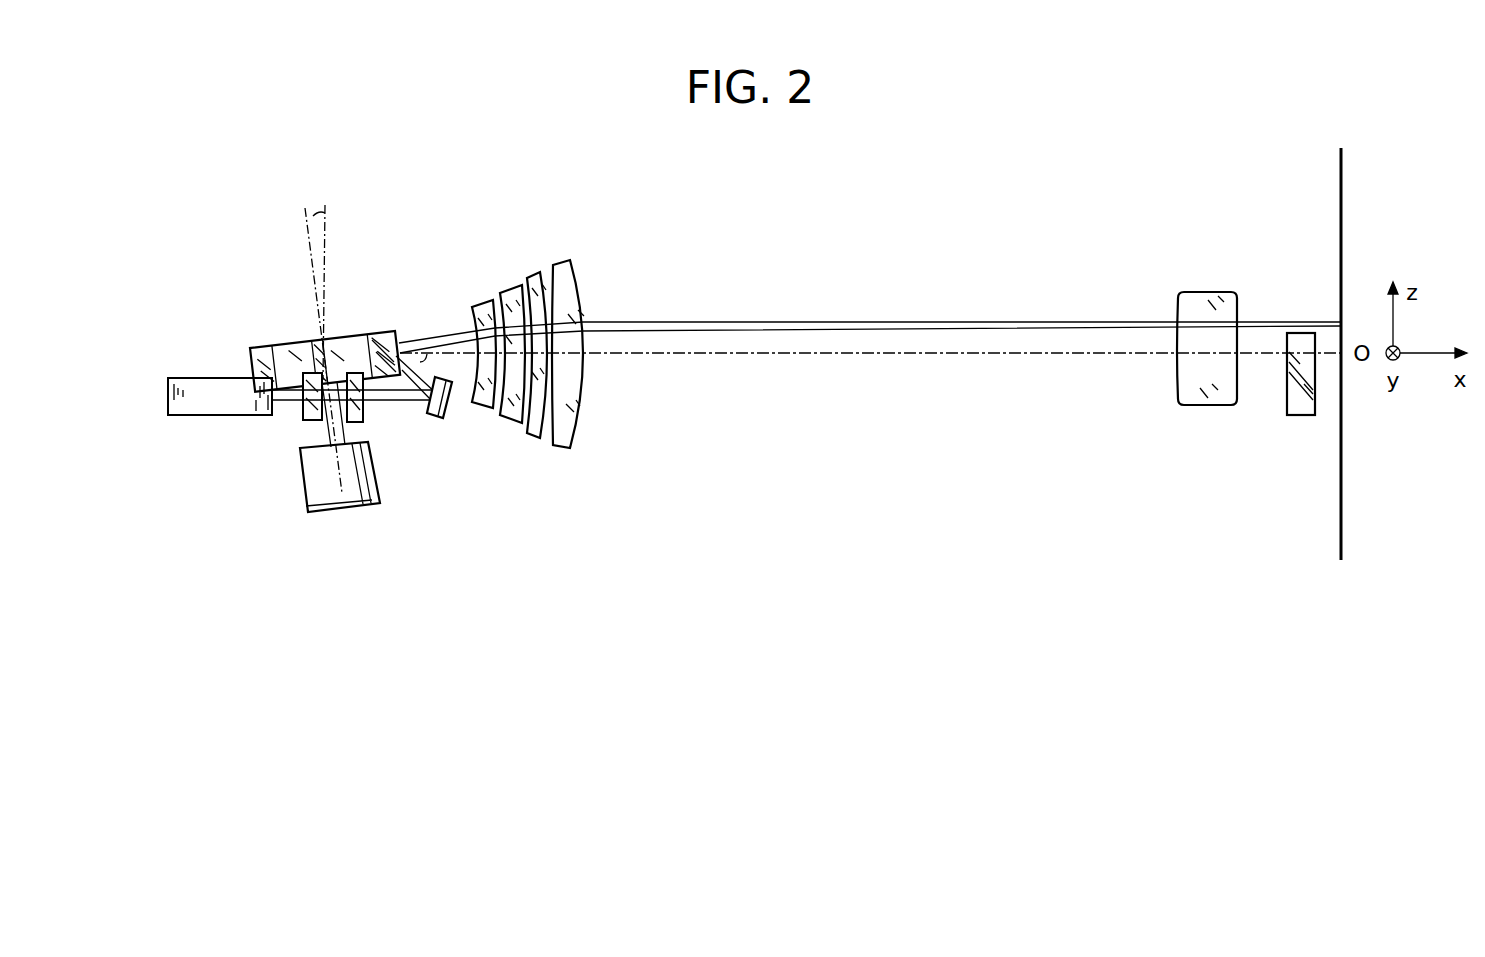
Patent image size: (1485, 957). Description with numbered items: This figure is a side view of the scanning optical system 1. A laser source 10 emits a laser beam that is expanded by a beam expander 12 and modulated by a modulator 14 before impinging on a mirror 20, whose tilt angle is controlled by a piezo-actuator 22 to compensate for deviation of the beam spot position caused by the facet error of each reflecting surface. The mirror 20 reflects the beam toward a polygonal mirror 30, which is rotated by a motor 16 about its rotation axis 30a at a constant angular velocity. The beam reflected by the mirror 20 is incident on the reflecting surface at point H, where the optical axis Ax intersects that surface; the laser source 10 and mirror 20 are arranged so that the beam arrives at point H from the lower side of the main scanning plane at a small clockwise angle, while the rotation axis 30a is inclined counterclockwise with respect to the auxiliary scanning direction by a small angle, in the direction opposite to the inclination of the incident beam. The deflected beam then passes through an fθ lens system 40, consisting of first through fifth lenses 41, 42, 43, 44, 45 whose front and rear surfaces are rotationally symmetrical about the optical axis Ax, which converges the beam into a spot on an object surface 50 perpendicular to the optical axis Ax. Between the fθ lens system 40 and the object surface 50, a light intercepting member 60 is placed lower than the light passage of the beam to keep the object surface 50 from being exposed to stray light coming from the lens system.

The scanning optical system 1 is at (364, 158).
The laser source 10 is at (213, 416).
The beam expander 12 is at (315, 422).
The modulator 14 is at (363, 412).
The motor 16 is at (335, 498).
The mirror 20 is at (430, 406).
The piezo-actuator 22 is at (437, 418).
The polygonal mirror 30 is at (270, 342).
The rotation axis 30a is at (308, 232).
The point H is at (388, 355).
The fθ lens system 40 is at (853, 443).
The first lens 41 is at (470, 416).
The second lens 42 is at (500, 428).
The third lens 43 is at (530, 446).
The fourth lens 44 is at (575, 384).
The fifth lens 45 is at (1222, 262).
The object surface 50 is at (1342, 497).
The light intercepting member 60 is at (1298, 416).
The optical axis Ax is at (866, 356).